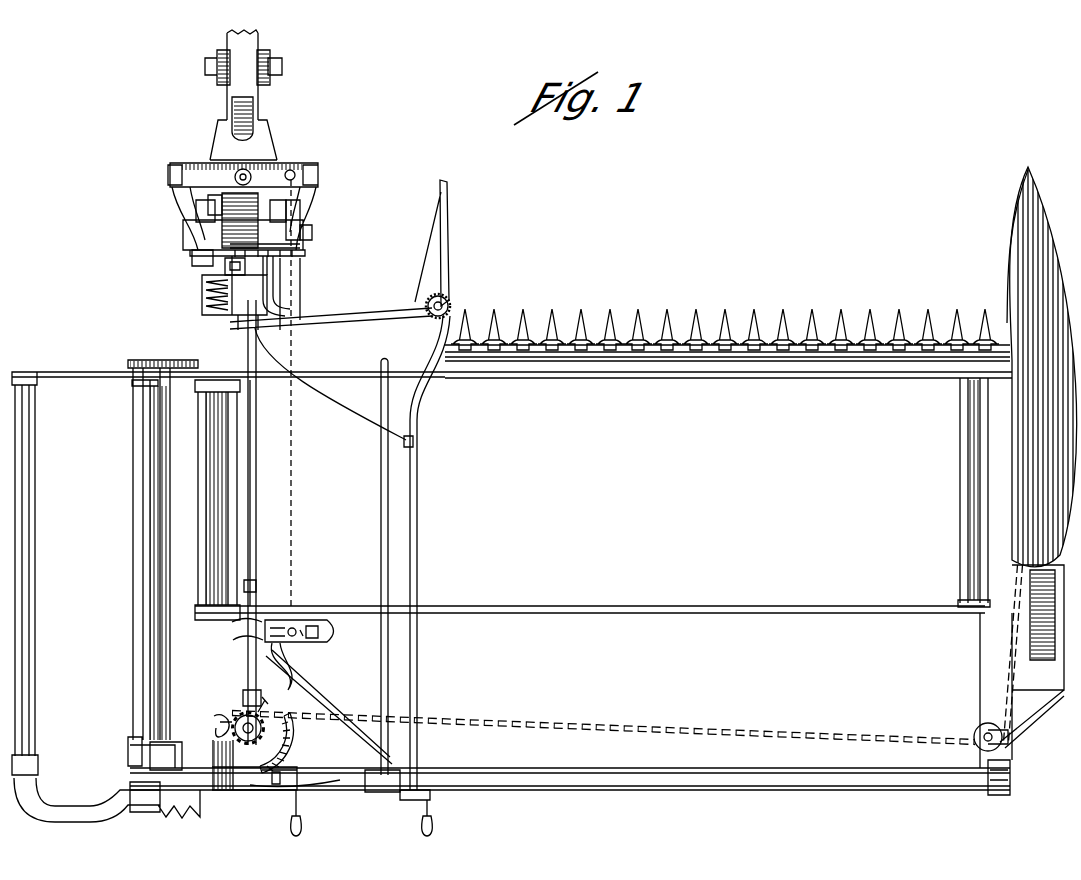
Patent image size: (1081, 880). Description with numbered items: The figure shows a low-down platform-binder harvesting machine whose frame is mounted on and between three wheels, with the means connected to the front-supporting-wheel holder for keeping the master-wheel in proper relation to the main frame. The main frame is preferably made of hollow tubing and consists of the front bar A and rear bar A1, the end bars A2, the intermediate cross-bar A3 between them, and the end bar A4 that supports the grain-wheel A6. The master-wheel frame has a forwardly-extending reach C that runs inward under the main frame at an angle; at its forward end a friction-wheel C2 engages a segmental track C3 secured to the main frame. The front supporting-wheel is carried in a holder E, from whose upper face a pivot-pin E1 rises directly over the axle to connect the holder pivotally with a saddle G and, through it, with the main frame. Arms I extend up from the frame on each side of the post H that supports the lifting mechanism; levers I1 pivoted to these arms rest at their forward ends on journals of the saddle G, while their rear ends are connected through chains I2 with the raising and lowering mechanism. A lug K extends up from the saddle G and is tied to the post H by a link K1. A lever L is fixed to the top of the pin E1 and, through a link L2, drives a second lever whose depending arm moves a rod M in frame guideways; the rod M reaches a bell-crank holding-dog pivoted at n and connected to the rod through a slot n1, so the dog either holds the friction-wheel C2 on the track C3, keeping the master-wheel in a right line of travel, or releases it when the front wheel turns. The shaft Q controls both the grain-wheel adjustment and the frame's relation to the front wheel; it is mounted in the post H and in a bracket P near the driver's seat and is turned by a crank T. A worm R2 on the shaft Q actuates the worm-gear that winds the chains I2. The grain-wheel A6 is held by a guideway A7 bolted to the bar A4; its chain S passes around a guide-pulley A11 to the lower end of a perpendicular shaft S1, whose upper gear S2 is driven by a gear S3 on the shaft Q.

The front bar A is at (915, 363).
The rear bar A1 is at (631, 775).
The end bars A2 is at (264, 563).
The intermediate cross-bar A3 is at (151, 564).
The end bar A4 is at (1007, 758).
The grain-wheel A6 is at (1037, 595).
The guideway A7 is at (1027, 577).
The guide-pulley A11 is at (973, 729).
The holder E is at (220, 145).
The pivot-pin E1 is at (246, 175).
The saddle G is at (267, 163).
The lug K is at (230, 207).
The link K1 is at (303, 240).
The arms I is at (278, 273).
The levers I1 is at (312, 195).
The chains I2 is at (227, 255).
The lever L is at (287, 237).
The link L2 is at (310, 207).
The post H is at (257, 301).
The worm R2 is at (203, 293).
The rod M is at (300, 518).
The shaft Q is at (222, 667).
The pivot n is at (313, 627).
The slot n1 is at (290, 626).
The reach C is at (230, 712).
The friction-wheel C2 is at (317, 650).
The segmental track C3 is at (329, 707).
The chain S is at (1011, 656).
The perpendicularly-arranged shaft S1 is at (603, 723).
The worm or gear S2 is at (267, 698).
The worm or gear S3 is at (211, 718).
The bracket P is at (285, 743).
The crank T is at (250, 787).